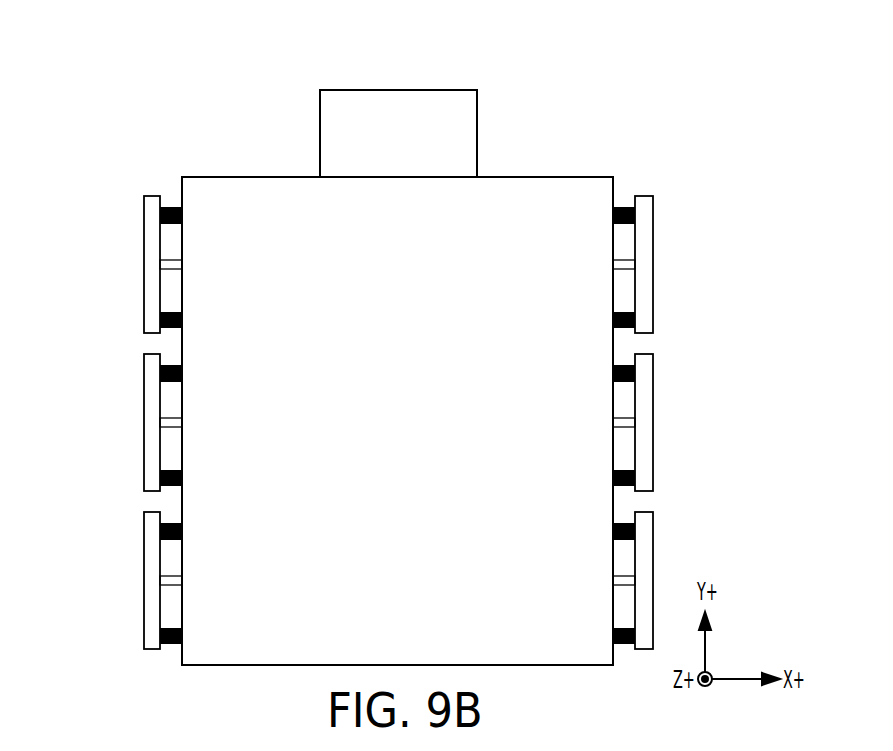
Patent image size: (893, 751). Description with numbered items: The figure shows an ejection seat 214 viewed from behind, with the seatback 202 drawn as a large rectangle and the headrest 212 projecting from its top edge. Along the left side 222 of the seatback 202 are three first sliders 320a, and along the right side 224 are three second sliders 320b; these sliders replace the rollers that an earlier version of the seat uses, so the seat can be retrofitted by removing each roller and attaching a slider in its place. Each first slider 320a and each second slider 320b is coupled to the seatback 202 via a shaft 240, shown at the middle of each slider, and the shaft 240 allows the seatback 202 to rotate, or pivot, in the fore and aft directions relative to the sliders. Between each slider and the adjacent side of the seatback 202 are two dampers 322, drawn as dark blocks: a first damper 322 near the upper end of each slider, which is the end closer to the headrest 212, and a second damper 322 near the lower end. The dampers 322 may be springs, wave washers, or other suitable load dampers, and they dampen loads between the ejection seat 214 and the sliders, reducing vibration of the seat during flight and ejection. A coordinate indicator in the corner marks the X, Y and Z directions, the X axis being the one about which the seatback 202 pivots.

The ejection seat 214 is at (125, 106).
The seatback 202 is at (392, 389).
The headrest 212 is at (413, 146).
The left side 222 is at (180, 193).
The right side 224 is at (615, 193).
The damper 322 is at (183, 216).
The shaft 240 is at (397, 422).
The first slider 320a is at (106, 422).
The second slider 320b is at (687, 422).